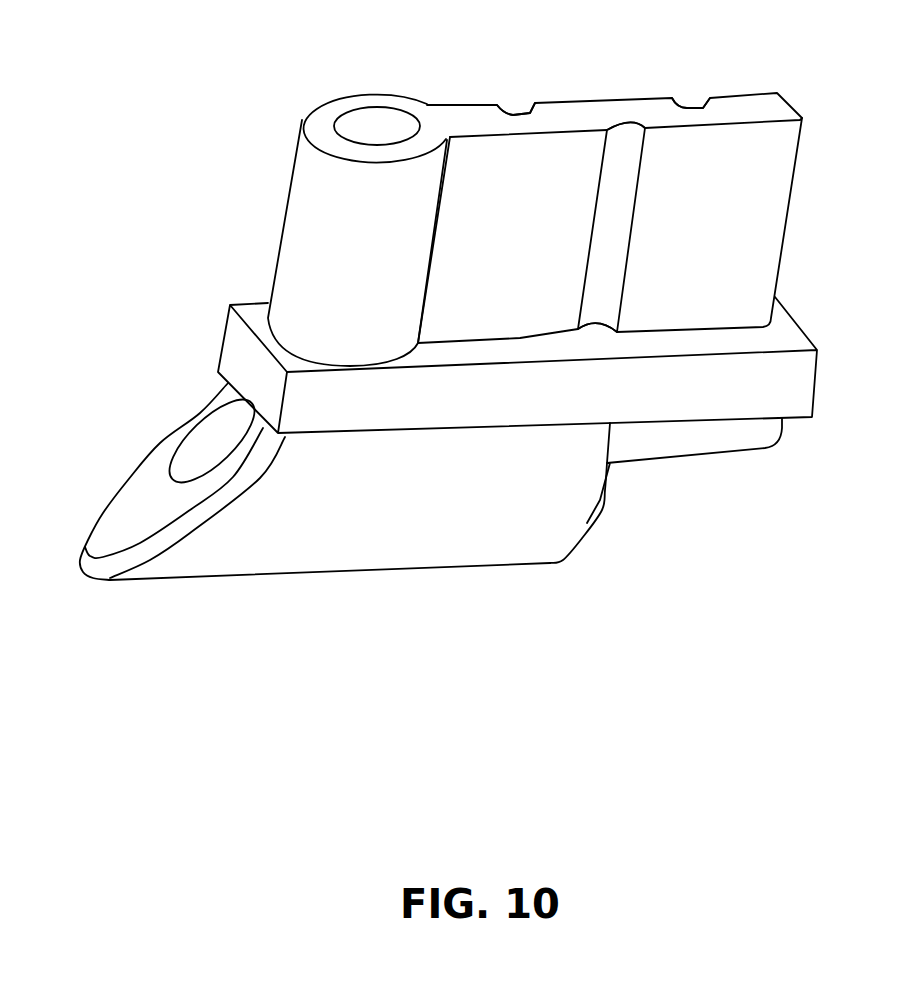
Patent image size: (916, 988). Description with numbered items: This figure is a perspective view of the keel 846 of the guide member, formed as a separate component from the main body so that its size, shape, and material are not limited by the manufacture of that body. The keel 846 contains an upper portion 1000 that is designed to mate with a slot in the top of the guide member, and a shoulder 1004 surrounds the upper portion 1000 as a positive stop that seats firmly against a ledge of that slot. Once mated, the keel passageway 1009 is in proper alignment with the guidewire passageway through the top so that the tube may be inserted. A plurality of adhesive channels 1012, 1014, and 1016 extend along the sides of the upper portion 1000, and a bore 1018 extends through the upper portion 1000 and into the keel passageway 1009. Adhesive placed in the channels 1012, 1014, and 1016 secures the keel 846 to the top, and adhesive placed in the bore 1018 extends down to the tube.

The keel 846 is at (617, 584).
The upper portion 1000 is at (296, 212).
The shoulder 1004 is at (797, 338).
The keel passageway 1009 is at (204, 450).
The adhesive channel 1012 is at (532, 112).
The adhesive channel 1014 is at (625, 120).
The adhesive channel 1016 is at (702, 102).
The bore 1018 is at (363, 120).